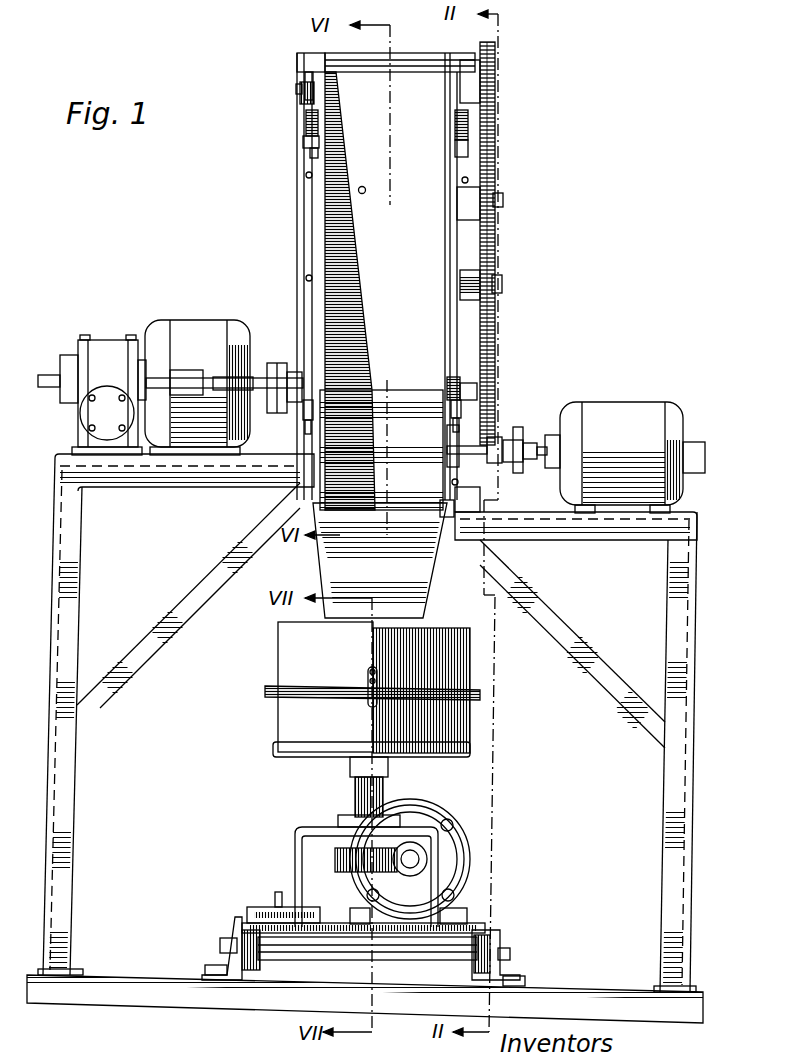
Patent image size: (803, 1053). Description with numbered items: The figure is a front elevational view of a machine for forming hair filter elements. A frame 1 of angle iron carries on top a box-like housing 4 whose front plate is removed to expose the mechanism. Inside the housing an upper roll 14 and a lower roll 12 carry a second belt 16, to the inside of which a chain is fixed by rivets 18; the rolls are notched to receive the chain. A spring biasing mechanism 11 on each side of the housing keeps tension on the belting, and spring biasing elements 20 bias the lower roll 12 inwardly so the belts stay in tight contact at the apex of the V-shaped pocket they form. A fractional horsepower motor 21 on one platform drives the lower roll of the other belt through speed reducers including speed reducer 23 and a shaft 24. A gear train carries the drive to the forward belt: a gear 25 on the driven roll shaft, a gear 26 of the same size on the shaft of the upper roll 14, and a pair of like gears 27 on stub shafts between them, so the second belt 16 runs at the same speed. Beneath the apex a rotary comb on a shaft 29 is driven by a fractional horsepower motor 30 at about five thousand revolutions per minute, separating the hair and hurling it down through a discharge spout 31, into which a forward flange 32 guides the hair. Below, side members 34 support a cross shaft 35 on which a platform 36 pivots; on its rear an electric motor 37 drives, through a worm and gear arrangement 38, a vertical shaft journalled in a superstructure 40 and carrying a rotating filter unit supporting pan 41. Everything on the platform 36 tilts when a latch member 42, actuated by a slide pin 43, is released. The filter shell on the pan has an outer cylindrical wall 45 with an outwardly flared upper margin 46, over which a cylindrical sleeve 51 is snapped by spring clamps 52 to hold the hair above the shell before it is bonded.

The frame 1 is at (666, 793).
The box-like housing 4 is at (298, 212).
The spring biasing mechanism 11 is at (300, 121).
The lower roll 12 is at (455, 378).
The upper roll 14 is at (310, 68).
The second belt 16 is at (423, 248).
The rivet 18 is at (366, 189).
The spring biasing elements 20 is at (302, 405).
The fractional horsepower motor 21 is at (185, 330).
The speed reducer 23 is at (100, 350).
The shaft 24 is at (220, 385).
The gear 25 is at (478, 388).
The gear 26 is at (497, 72).
The pair of like gears 27 is at (487, 317).
The shaft 29 is at (472, 455).
The fractional horsepower motor 30 is at (612, 415).
The discharge spout 31 is at (415, 568).
The forward flange 32 is at (395, 405).
The side members 34 is at (235, 930).
The cross shaft 35 is at (385, 950).
The platform 36 is at (335, 935).
The electric motor 37 is at (465, 850).
The worm and gear arrangement 38 is at (357, 862).
The superstructure 40 is at (318, 827).
The filter unit supporting pan 41 is at (273, 747).
The latch member 42 is at (245, 908).
The slide pin 43 is at (277, 894).
The outer cylindrical wall 45 is at (288, 718).
The outwardly flared upper margin 46 is at (265, 690).
The cylindrical sleeve 51 is at (288, 648).
The spring clamps 52 is at (365, 672).